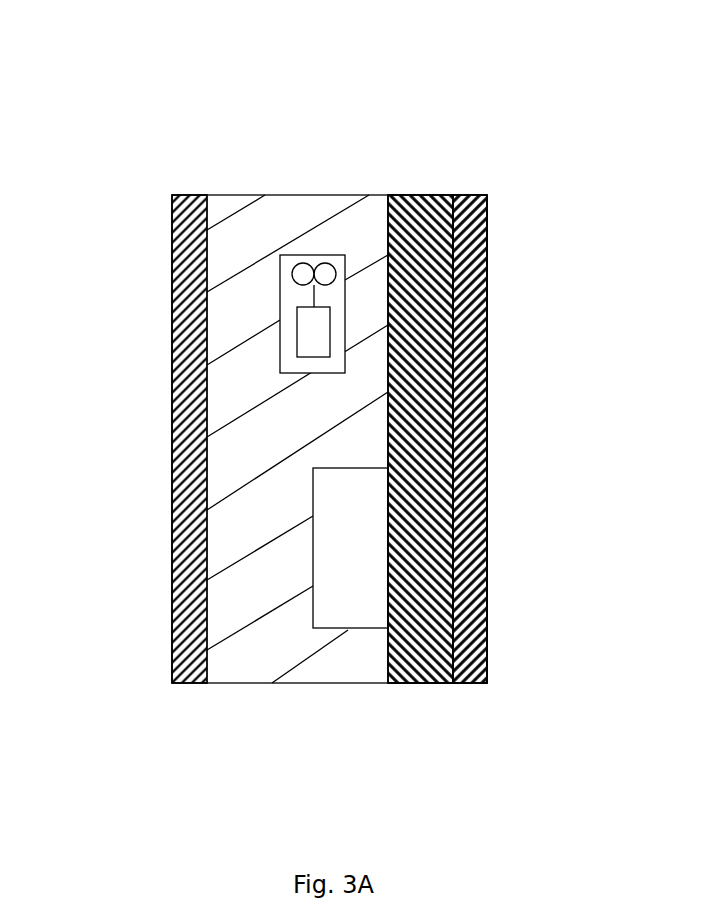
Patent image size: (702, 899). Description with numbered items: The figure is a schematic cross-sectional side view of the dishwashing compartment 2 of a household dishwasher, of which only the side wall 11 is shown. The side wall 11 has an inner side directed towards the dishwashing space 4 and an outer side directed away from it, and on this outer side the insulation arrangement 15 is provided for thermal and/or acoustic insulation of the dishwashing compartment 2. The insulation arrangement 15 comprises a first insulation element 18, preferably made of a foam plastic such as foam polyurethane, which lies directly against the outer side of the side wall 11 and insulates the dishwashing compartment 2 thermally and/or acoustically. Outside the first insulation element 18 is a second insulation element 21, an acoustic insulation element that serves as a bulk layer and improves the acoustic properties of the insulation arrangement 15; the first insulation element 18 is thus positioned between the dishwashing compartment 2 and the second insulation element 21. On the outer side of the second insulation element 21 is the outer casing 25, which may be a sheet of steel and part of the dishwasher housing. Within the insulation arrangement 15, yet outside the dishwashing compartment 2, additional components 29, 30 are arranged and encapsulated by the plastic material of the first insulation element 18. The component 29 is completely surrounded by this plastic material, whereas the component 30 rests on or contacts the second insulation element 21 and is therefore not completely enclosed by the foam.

The dishwashing compartment 2 is at (311, 66).
The dishwashing space 4 is at (94, 451).
The side wall 11 is at (172, 578).
The insulation arrangement 15 is at (414, 506).
The first insulation element 18 is at (342, 683).
The second insulation element 21 is at (452, 481).
The outer casing 25 is at (487, 652).
The component 29 is at (280, 347).
The component 30 is at (312, 624).